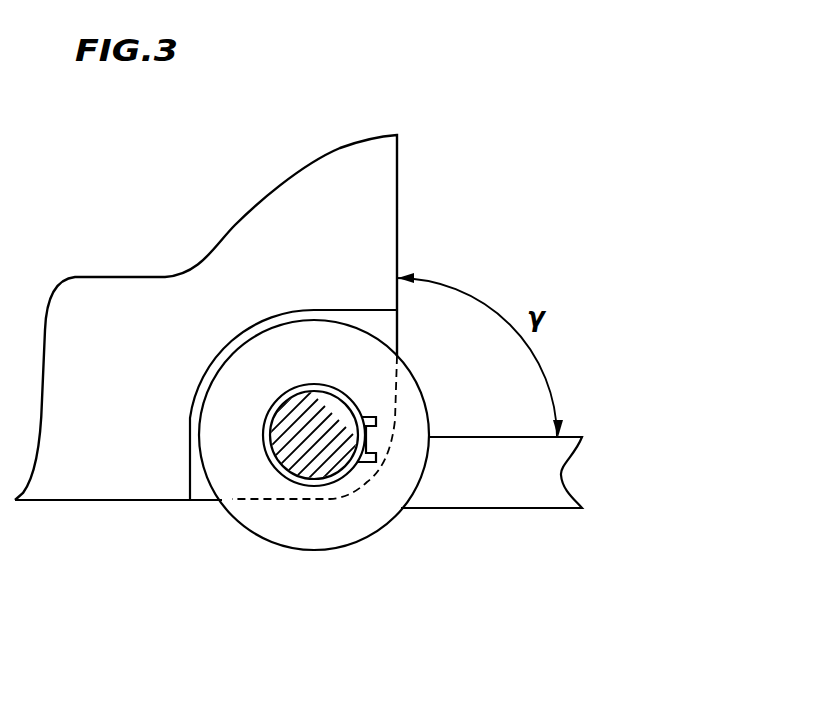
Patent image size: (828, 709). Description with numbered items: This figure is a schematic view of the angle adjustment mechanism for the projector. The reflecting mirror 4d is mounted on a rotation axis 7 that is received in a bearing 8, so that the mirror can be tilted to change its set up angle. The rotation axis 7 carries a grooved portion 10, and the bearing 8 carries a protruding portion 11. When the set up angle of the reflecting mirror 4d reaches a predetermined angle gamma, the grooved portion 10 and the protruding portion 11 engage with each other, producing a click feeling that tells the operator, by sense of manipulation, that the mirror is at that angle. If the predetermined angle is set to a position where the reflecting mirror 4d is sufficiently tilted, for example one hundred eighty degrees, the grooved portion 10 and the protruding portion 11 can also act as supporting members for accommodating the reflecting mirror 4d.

The reflecting mirror 4d is at (367, 202).
The bearing 8 is at (220, 423).
The rotation axis 7 is at (287, 460).
The grooved portion 10 is at (338, 457).
The protruding portion 11 is at (371, 442).